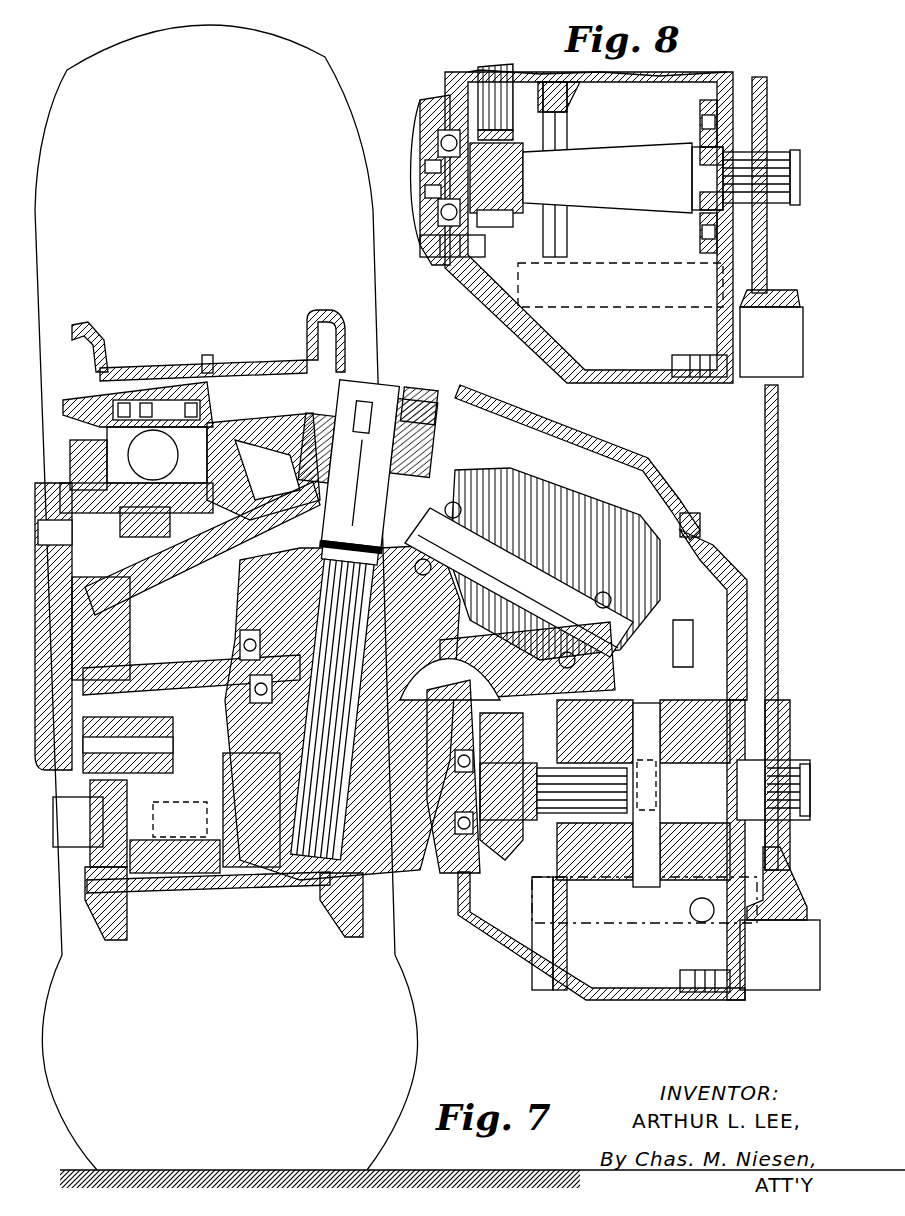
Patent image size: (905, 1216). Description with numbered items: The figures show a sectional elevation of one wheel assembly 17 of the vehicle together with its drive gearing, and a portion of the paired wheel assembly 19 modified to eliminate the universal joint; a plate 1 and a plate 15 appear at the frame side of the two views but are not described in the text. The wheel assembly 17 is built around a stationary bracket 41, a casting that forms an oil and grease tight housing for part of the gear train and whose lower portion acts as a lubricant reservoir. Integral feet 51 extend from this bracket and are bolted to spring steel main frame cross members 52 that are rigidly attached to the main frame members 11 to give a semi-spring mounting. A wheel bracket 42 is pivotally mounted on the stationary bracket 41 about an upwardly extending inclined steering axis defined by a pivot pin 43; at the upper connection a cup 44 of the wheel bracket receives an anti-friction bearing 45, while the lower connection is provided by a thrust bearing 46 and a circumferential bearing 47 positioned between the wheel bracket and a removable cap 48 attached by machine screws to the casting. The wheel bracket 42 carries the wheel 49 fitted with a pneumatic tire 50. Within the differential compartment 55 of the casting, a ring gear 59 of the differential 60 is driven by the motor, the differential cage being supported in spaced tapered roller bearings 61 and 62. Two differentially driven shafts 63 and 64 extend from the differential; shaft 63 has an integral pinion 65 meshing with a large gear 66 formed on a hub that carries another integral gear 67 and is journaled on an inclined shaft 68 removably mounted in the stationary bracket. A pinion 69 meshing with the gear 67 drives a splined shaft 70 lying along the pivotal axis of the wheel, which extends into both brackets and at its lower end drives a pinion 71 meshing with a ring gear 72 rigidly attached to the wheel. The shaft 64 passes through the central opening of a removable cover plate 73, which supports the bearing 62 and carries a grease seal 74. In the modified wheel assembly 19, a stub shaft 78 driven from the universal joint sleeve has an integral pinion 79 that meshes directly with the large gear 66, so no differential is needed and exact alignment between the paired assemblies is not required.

In FIG. 8, the frame plate 1 is at (768, 80).
In FIG. 7, the main frame member 11 is at (780, 670).
In FIG. 7, the mounting plate 15 is at (767, 447).
In FIG. 7, the wheel assembly 17 is at (438, 1014).
In FIG. 8, the wheel assembly 19 is at (423, 91).
In FIG. 7, the stationary bracket 41 is at (476, 940).
In FIG. 7, the wheel bracket 42 is at (160, 598).
In FIG. 7, the pivot pin 43 is at (360, 464).
In FIG. 7, the cup 44 is at (413, 437).
In FIG. 7, the anti-friction bearing 45 is at (362, 440).
In FIG. 7, the thrust bearing 46 is at (490, 670).
In FIG. 7, the circumferential bearing 47 is at (248, 676).
In FIG. 7, the removable cap 48 is at (240, 633).
In FIG. 7, the wheel 49 is at (116, 418).
In FIG. 7, the pneumatic tire 50 is at (226, 597).
In FIG. 7, the feet 51 is at (752, 913).
In FIG. 8, the main frame cross member 52 is at (771, 342).
In FIG. 7, the main frame cross member 52 is at (802, 990).
In FIG. 7, the differential compartment 55 is at (644, 918).
In FIG. 7, the ring gear 59 is at (680, 643).
In FIG. 7, the differential 60 is at (646, 905).
In FIG. 7, the tapered roller bearing 61 is at (567, 737).
In FIG. 7, the tapered roller bearing 62 is at (750, 733).
In FIG. 7, the differentially driven shaft 63 is at (547, 812).
In FIG. 7, the differentially driven shaft 64 is at (757, 803).
In FIG. 7, the pinion 65 is at (500, 842).
In FIG. 8, the large gear 66 is at (492, 80).
In FIG. 7, the large gear 66 is at (650, 490).
In FIG. 7, the integral gear 67 is at (503, 473).
In FIG. 7, the inclined shaft 68 is at (519, 582).
In FIG. 7, the pinion 69 is at (277, 603).
In FIG. 7, the splined shaft 70 is at (387, 807).
In FIG. 7, the pinion 71 is at (438, 823).
In FIG. 7, the ring gear 72 is at (250, 462).
In FIG. 7, the removable cover plate 73 is at (740, 967).
In FIG. 7, the grease seal 74 is at (750, 765).
In FIG. 8, the stub shaft 78 is at (607, 178).
In FIG. 8, the pinion 79 is at (495, 228).